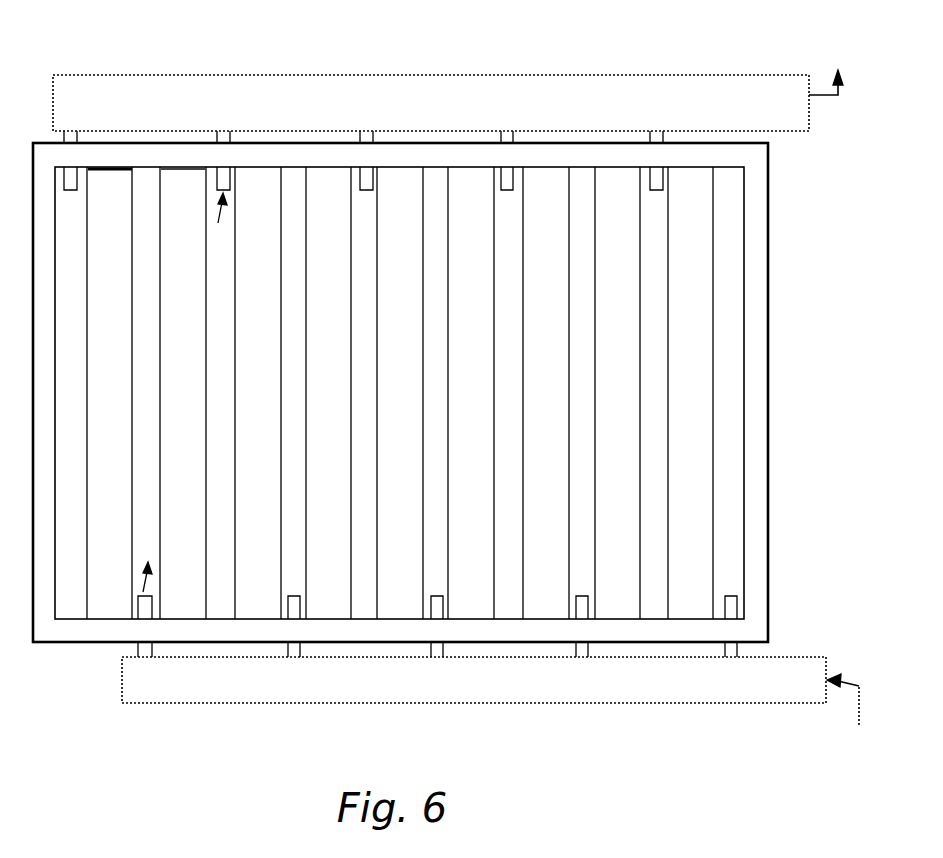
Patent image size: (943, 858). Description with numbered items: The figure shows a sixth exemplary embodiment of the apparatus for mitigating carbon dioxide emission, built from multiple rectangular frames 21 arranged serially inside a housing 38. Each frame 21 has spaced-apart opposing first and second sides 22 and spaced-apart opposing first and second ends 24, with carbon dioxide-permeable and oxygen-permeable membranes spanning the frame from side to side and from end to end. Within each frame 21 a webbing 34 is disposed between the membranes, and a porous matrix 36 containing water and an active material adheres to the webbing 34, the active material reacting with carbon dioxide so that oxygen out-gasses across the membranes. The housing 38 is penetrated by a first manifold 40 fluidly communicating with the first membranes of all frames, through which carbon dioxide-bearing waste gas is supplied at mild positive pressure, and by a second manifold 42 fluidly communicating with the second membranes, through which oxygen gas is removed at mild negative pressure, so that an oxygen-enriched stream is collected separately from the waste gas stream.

The rectangular frame 21 is at (130, 176).
The first and second sides 22 is at (400, 393).
The first and second ends 24 is at (113, 172).
The webbing 34 is at (133, 463).
The porous matrix 36 is at (88, 383).
The housing 38 is at (768, 400).
The first manifold 40 is at (195, 703).
The second manifold 42 is at (328, 75).